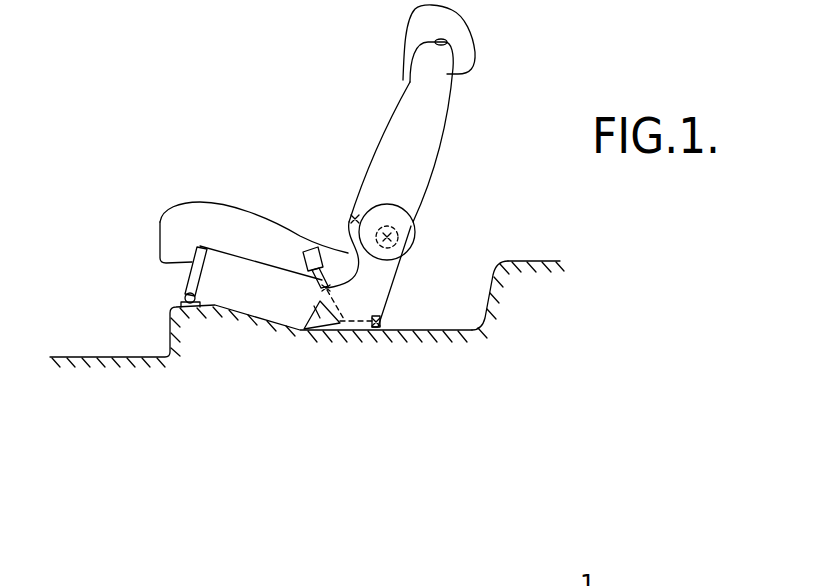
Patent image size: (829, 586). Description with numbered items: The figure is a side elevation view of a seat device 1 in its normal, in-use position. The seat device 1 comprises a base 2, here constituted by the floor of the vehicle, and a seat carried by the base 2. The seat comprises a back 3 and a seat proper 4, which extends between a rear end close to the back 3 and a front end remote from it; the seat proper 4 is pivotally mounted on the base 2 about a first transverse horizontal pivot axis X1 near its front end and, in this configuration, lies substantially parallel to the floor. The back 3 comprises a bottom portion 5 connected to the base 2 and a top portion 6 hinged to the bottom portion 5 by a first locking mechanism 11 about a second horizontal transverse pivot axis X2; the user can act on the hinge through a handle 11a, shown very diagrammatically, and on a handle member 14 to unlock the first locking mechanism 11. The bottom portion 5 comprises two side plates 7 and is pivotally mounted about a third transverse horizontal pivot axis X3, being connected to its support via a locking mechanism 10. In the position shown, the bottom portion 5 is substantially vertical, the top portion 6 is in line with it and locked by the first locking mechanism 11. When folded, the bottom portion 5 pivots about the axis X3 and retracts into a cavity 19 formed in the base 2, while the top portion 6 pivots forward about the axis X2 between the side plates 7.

The seat device 1 is at (441, 190).
The base 2 is at (540, 263).
The back 3 is at (448, 115).
The seat proper 4 is at (190, 222).
The bottom portion 5 is at (303, 300).
The top portion 6 is at (383, 158).
The side plates 7 is at (391, 291).
The locking mechanism 10 is at (290, 343).
The first locking mechanism 11 is at (400, 243).
The handle 11a is at (352, 216).
The handle member 14 is at (446, 38).
The cavity 19 is at (468, 300).
The first transverse horizontal pivot axis X1 is at (184, 295).
The second horizontal transverse pivot axis X2 is at (391, 236).
The third transverse horizontal pivot axis X3 is at (377, 332).